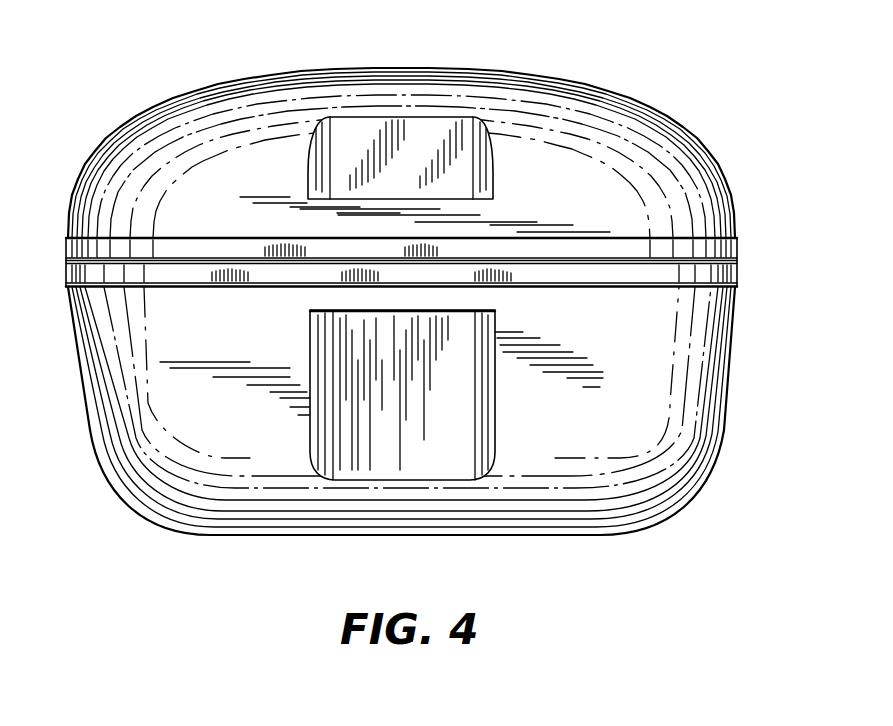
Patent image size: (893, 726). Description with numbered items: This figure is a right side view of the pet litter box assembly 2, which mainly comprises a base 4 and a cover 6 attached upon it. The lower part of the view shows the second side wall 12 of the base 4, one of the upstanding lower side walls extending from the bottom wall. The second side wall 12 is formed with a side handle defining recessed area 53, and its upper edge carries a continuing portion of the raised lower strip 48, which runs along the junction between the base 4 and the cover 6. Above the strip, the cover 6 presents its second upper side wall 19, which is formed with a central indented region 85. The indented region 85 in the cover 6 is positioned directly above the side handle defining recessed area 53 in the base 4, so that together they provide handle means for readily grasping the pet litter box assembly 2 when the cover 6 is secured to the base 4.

The pet litter box assembly 2 is at (445, 269).
The cover 6 is at (413, 135).
The base 4 is at (446, 411).
The second upper side wall 19 is at (566, 200).
The central indented region 85 is at (400, 150).
The raised lower strip 48 is at (193, 270).
The side handle defining recessed area 53 is at (400, 447).
The second side wall 12 is at (580, 435).